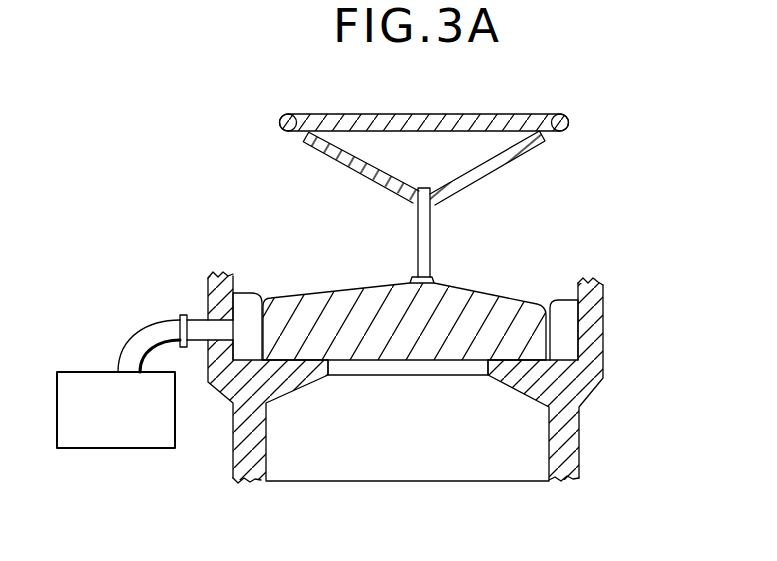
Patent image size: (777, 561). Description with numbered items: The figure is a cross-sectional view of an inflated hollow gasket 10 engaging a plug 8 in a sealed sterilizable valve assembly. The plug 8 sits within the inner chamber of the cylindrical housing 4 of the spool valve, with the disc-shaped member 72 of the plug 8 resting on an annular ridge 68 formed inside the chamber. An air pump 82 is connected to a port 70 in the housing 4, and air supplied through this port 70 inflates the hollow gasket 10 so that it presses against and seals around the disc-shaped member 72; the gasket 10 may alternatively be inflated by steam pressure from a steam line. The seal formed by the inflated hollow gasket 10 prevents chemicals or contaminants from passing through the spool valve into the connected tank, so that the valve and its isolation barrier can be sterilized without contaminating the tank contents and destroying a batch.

The cylindrical housing 4 is at (603, 360).
The plug 8 is at (535, 212).
The hollow gasket 10 is at (264, 293).
The annular ridge 68 is at (523, 393).
The port 70 is at (180, 320).
The disc-shaped member 72 is at (473, 290).
The air pump 82 is at (107, 448).